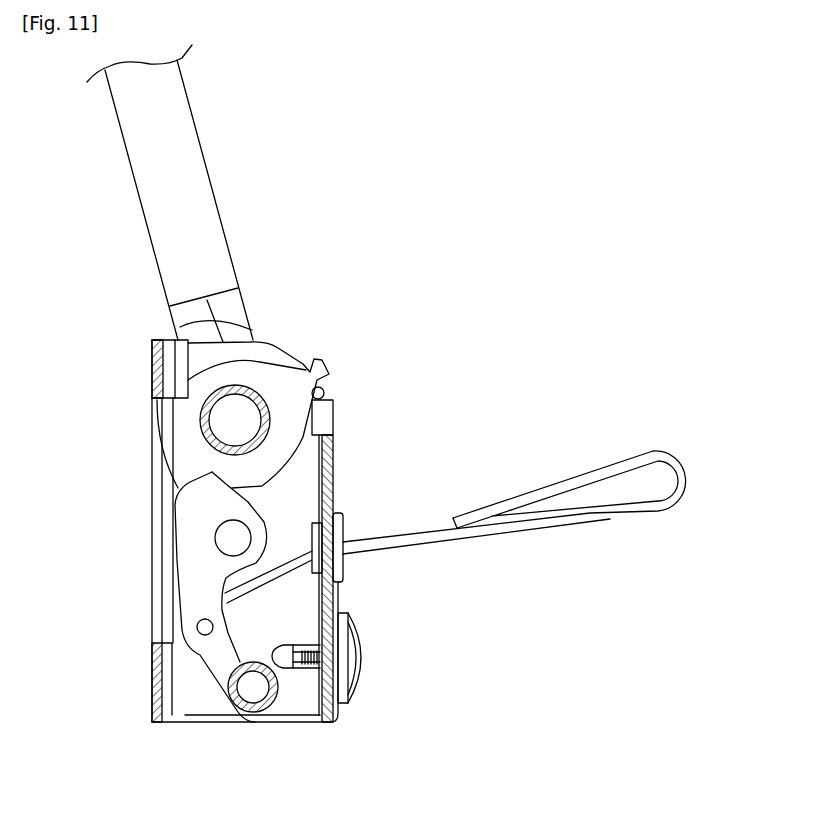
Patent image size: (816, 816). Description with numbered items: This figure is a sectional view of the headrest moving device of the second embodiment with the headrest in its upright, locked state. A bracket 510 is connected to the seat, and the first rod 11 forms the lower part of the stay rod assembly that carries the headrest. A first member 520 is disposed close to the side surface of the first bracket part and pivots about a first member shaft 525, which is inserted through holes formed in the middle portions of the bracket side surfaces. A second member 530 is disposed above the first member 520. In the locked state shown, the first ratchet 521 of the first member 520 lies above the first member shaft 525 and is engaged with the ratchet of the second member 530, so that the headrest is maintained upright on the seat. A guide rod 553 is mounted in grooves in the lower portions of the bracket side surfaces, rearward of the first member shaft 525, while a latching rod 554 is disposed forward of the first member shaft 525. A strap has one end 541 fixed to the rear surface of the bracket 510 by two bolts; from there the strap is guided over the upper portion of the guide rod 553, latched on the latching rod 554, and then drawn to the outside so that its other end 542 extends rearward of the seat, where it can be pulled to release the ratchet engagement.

The first rod 11 is at (210, 396).
The bracket 510 is at (334, 478).
The first member 520 is at (170, 597).
The first ratchet 521 is at (208, 478).
The first member shaft 525 is at (232, 542).
The second member 530 is at (285, 354).
The one end of the strap 541 is at (340, 605).
The other end of the strap 542 is at (612, 515).
The guide rod 553 is at (260, 708).
The latching rod 554 is at (203, 625).